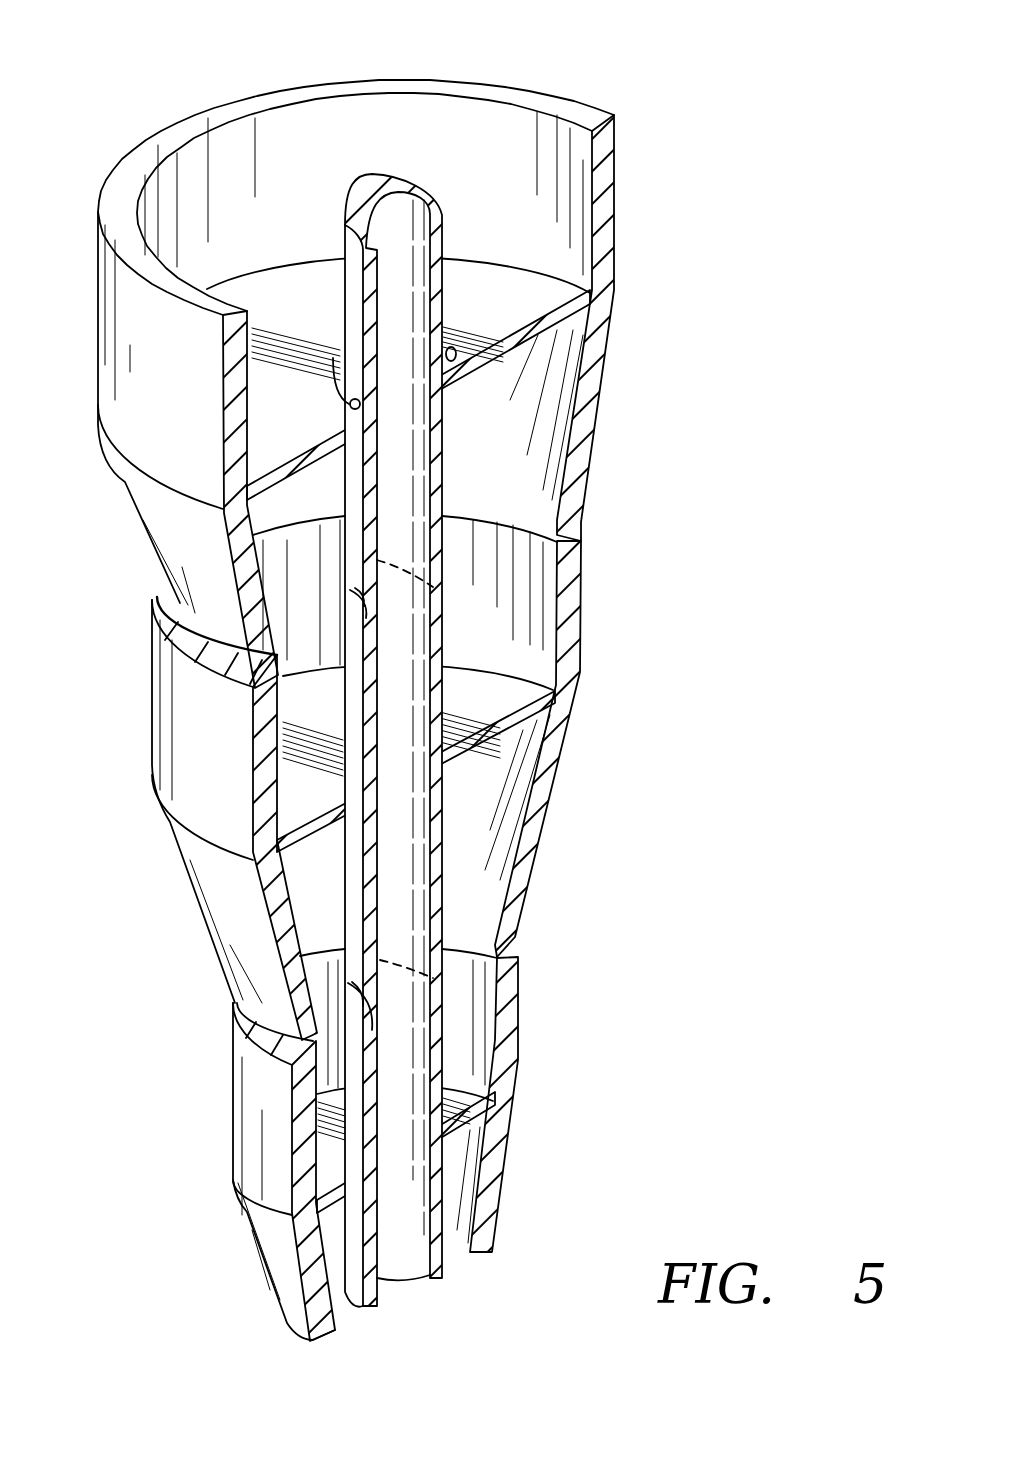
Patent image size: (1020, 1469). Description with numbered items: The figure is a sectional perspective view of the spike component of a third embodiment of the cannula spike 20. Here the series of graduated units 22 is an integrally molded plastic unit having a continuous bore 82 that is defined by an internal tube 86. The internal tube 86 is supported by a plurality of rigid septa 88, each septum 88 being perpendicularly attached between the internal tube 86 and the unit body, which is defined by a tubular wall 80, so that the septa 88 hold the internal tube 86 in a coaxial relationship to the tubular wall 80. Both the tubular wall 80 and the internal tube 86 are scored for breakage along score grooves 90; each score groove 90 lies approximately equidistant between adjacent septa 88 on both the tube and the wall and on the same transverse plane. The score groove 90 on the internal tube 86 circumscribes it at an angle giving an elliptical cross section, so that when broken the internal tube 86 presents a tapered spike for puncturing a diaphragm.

The cannula spike 20 is at (444, 678).
The graduated units 22 is at (641, 340).
The tubular wall 80 is at (143, 530).
The continuous bore 82 is at (392, 484).
The internal tube 86 is at (412, 198).
The septum 88 is at (322, 310).
The score groove 90 is at (560, 537).